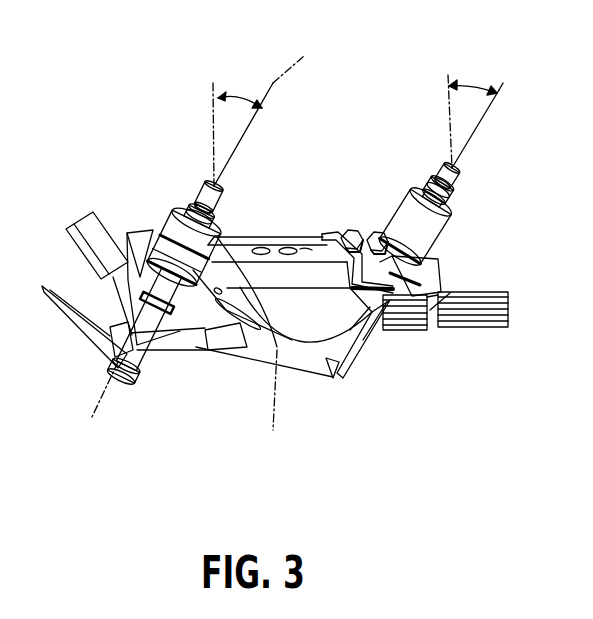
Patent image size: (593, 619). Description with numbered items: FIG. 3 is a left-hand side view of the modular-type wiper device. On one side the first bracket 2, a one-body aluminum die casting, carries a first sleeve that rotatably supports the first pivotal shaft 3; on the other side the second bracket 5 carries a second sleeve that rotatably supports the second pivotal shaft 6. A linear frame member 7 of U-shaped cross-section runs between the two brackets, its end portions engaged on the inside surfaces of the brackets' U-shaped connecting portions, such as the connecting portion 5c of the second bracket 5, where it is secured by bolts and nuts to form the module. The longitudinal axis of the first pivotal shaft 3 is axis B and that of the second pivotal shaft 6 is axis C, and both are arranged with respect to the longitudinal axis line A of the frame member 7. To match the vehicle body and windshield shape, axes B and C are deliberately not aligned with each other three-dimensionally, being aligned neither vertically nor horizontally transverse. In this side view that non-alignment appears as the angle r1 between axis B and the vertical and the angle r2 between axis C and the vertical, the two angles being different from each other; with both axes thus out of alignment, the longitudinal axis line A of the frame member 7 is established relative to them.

The first bracket 2 is at (198, 318).
The first pivotal shaft 3 is at (205, 186).
The second bracket 5 is at (420, 283).
The connecting portion 5c is at (338, 228).
The second pivotal shaft 6 is at (453, 188).
The frame member 7 is at (302, 236).
The longitudinal axis line of the frame member A is at (267, 407).
The longitudinal axis of the first pivotal shaft B is at (269, 110).
The longitudinal axis of the second pivotal shaft C is at (487, 113).
The angle γ1 r1 is at (237, 122).
The angle γ2 r2 is at (472, 109).